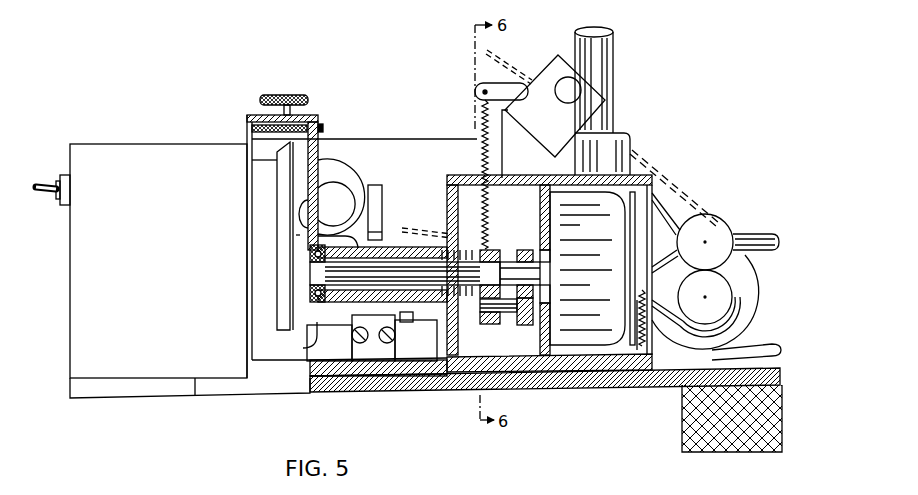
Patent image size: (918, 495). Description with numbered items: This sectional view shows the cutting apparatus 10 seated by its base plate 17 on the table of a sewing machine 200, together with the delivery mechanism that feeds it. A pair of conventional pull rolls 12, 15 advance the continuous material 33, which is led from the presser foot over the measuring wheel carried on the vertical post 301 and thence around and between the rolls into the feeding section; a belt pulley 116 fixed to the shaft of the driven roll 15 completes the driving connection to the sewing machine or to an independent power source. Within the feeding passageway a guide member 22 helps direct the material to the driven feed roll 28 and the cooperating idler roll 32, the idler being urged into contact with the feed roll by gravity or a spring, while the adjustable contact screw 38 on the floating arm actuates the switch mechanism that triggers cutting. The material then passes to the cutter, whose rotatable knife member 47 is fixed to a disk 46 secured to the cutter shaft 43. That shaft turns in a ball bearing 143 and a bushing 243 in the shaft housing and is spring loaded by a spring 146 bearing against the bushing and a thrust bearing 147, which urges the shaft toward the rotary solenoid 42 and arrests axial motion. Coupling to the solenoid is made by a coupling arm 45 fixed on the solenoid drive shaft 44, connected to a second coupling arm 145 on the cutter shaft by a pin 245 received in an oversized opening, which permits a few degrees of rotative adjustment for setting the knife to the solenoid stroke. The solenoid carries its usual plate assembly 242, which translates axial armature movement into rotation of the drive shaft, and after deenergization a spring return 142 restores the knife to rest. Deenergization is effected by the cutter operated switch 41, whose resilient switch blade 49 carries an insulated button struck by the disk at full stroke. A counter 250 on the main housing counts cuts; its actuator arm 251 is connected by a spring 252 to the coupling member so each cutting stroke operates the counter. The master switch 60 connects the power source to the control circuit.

The cutting apparatus 10 is at (155, 142).
The master switch 60 is at (62, 176).
The rotatable knife member 47 is at (290, 187).
The adjustable contact screw 38 is at (288, 92).
The idler roll 32 is at (320, 198).
The feed roll 28 is at (346, 218).
The guide member 22 is at (376, 185).
The continuous material 33 is at (505, 58).
The bushing 243 is at (428, 250).
The spring 146 is at (446, 294).
The cutter shaft 43 is at (315, 278).
The ball bearing 143 is at (305, 253).
The disk 46 is at (298, 238).
The thrust bearing 147 is at (470, 248).
The solenoid drive shaft 44 is at (512, 264).
The coupling arm 45 is at (530, 249).
The coupling arm 145 is at (505, 324).
The pin 245 is at (484, 315).
The rotary solenoid 42 is at (578, 243).
The plate assembly 242 is at (637, 205).
The spring return 142 is at (630, 310).
The actuator arm 251 is at (488, 83).
The spring 252 is at (483, 106).
The counter 250 is at (538, 128).
The vertical post 301 is at (612, 42).
The pull roll 12 is at (697, 239).
The pull roll 15 is at (697, 293).
The belt pulley 116 is at (755, 312).
The base plate 17 is at (322, 388).
The cutter operated switch 41 is at (375, 342).
The switch blade 49 is at (300, 348).
The sewing machine 200 is at (683, 432).